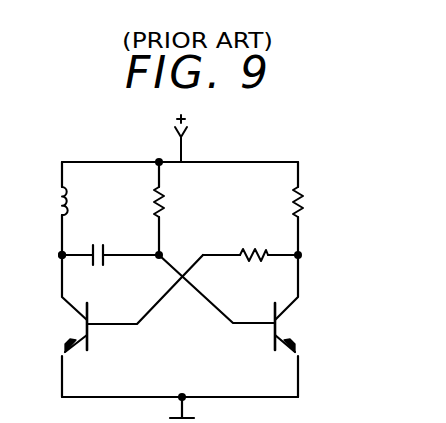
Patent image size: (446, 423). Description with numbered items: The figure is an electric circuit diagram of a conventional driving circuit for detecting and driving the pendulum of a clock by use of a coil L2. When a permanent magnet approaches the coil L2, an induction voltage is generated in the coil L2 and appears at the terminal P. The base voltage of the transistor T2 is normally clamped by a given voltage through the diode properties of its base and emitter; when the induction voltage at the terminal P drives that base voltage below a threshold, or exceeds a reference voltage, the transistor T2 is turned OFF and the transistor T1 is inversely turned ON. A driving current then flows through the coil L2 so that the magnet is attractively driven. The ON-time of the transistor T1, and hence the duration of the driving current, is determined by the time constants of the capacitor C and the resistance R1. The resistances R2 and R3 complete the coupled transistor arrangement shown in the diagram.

The coil L2 is at (61, 192).
The resistance R1 is at (165, 205).
The resistor R2 is at (246, 253).
The resistor R3 is at (303, 205).
The capacitor C is at (103, 263).
The terminal P is at (60, 258).
The transistor T1 is at (76, 336).
The transistor T2 is at (292, 336).